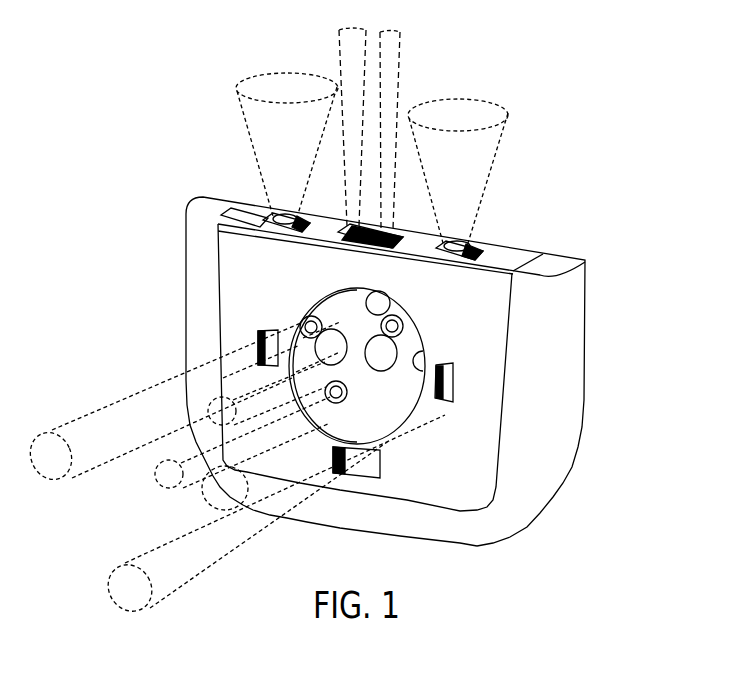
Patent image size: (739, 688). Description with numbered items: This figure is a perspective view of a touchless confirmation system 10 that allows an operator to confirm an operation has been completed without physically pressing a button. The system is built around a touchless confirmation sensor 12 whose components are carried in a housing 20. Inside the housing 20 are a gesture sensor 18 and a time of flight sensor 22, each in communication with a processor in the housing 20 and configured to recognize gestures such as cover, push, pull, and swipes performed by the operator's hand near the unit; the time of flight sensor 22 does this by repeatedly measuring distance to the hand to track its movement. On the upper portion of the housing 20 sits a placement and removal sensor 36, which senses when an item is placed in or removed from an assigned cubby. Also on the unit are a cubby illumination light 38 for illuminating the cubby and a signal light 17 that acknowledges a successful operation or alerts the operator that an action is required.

The touchless confirmation system 10 is at (582, 220).
The touchless confirmation sensor 12 is at (132, 337).
The signal light 17 is at (206, 433).
The gesture sensor 18 is at (117, 420).
The housing 20 is at (548, 475).
The time of flight sensor 22 is at (135, 613).
The placement and removal sensor 36 is at (247, 125).
The cubby illumination light 38 is at (337, 48).